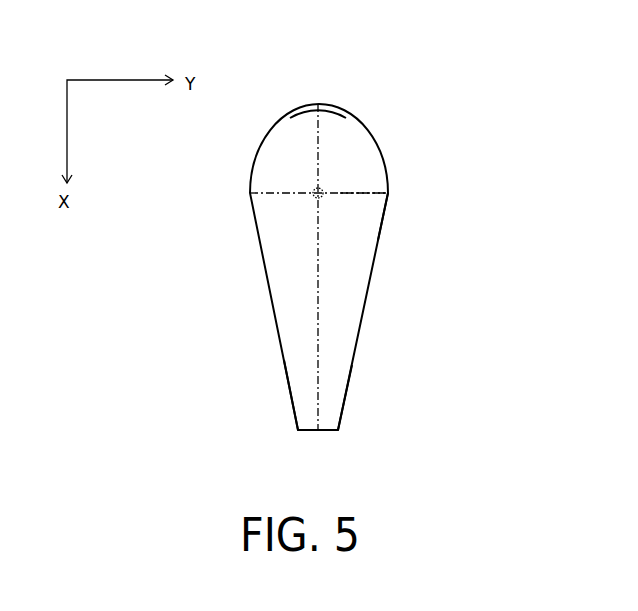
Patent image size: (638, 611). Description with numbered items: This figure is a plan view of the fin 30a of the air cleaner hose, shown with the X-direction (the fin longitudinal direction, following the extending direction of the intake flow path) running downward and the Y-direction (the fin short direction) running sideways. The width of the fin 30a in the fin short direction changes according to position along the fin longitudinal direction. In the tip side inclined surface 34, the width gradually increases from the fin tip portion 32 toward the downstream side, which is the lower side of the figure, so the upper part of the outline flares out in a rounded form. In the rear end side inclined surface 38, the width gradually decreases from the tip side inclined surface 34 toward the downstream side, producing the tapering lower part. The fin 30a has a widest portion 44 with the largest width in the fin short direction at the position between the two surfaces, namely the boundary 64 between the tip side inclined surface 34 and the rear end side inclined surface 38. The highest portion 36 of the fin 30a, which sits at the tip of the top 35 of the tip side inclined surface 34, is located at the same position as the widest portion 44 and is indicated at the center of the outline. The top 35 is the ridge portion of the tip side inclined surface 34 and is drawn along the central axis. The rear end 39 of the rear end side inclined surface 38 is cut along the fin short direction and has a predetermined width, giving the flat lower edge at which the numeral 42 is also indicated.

The fin 30a is at (412, 108).
The fin tip portion 32 is at (320, 104).
The tip side inclined surface 34 is at (349, 155).
The highest portion 36 is at (312, 196).
The rear end side inclined surface 38 is at (349, 275).
The boundary 64 is at (330, 192).
The widest portion 44 is at (388, 193).
The top 35 is at (317, 363).
The rear end 39 is at (325, 428).
The base end portion 42 is at (310, 432).